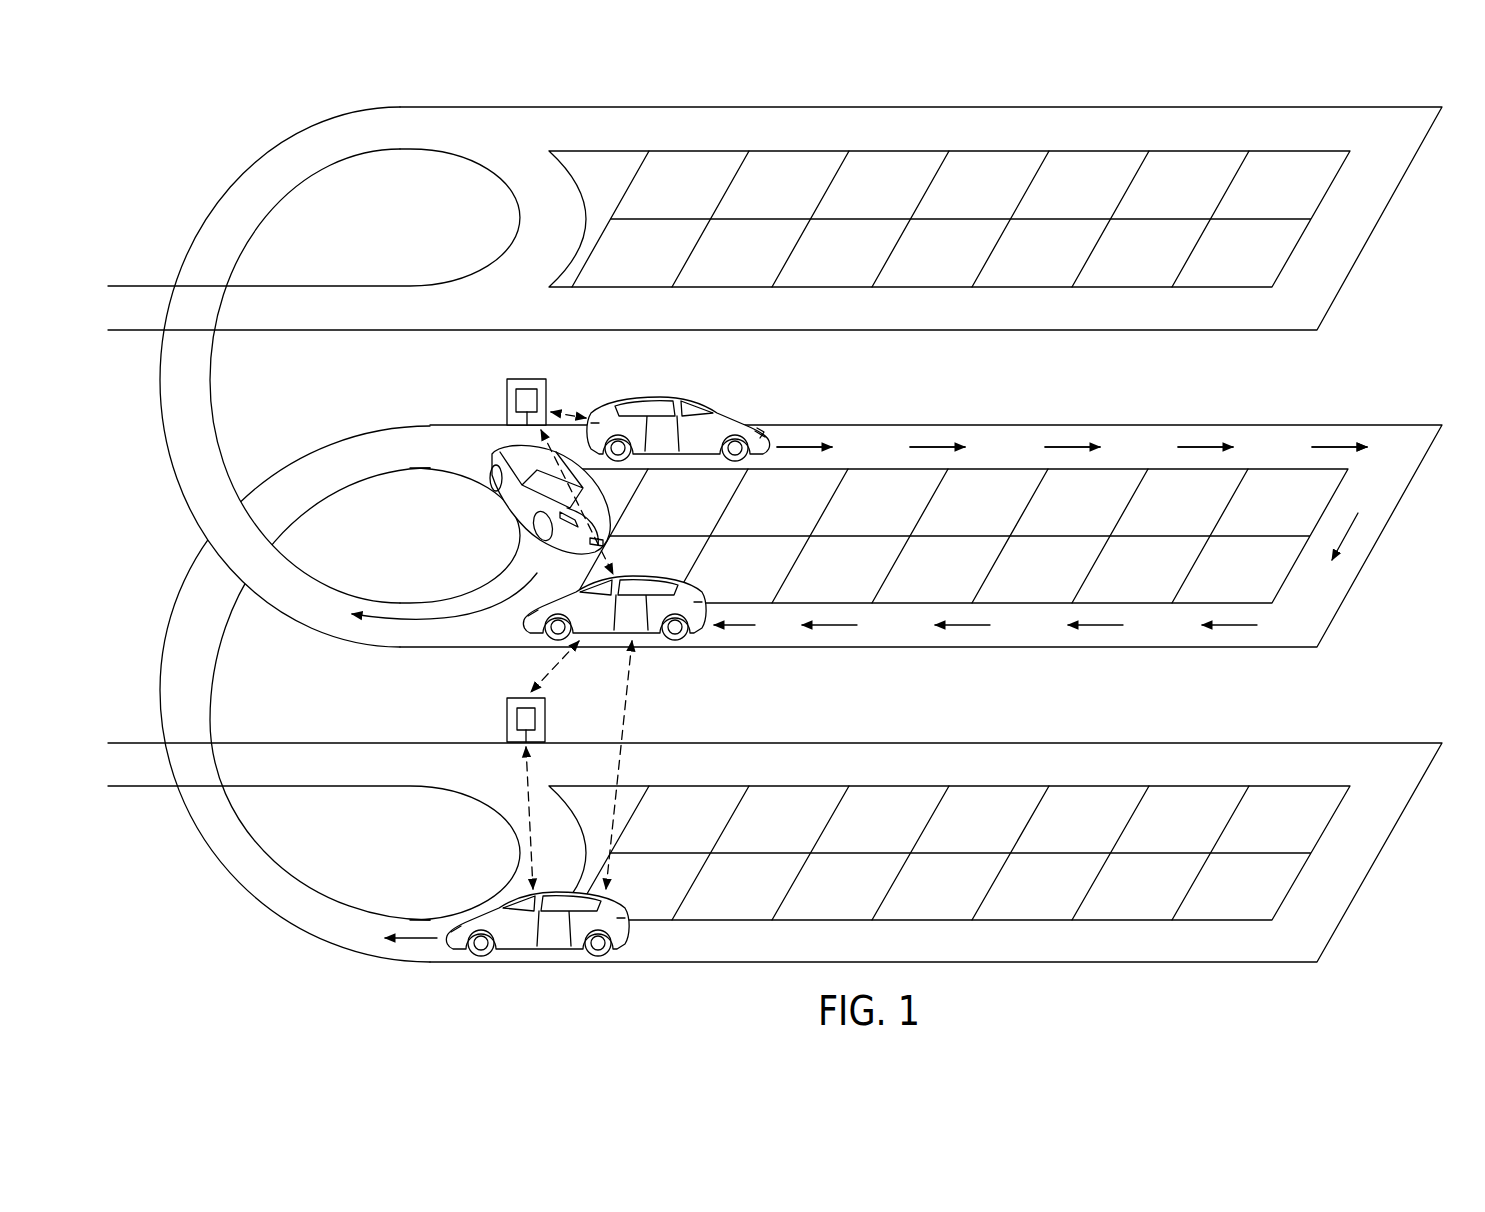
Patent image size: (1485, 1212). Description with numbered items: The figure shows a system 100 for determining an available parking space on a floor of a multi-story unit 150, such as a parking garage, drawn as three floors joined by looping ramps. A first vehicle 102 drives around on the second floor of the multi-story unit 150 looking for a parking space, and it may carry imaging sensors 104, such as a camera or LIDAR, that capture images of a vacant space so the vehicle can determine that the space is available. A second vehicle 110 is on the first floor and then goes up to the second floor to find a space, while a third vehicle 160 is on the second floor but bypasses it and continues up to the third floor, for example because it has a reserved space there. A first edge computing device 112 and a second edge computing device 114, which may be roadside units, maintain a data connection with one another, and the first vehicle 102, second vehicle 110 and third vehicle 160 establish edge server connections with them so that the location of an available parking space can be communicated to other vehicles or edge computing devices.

The system 100 is at (165, 188).
The first vehicle 102 is at (672, 397).
The imaging sensors 104 is at (763, 430).
The second vehicle 110 is at (620, 950).
The first edge computing device 112 is at (507, 392).
The second edge computing device 114 is at (507, 720).
The multi-story unit 150 is at (171, 554).
The third vehicle 160 is at (520, 500).